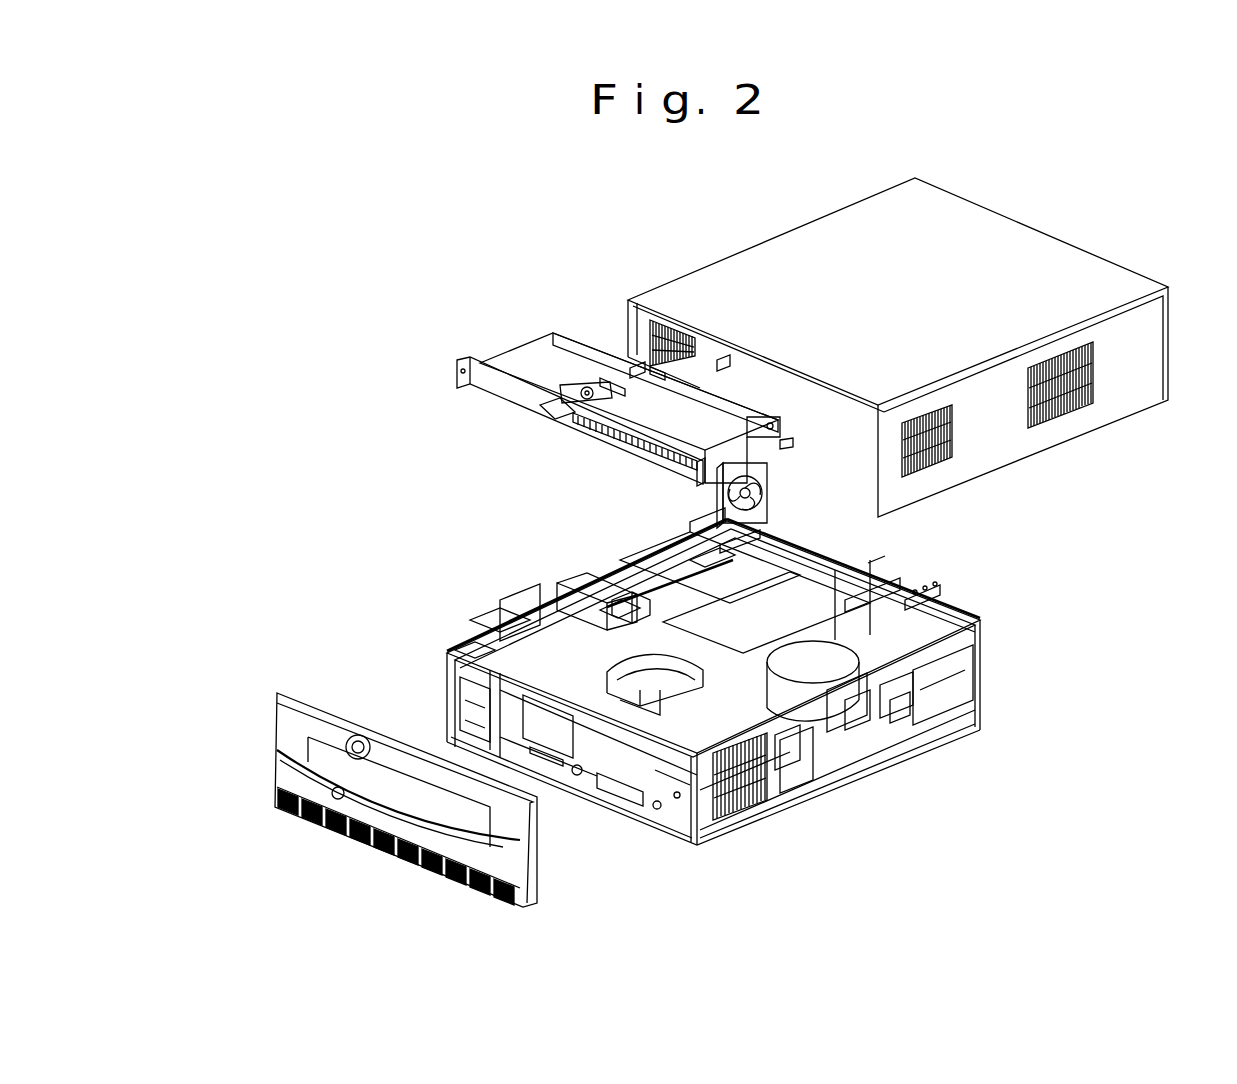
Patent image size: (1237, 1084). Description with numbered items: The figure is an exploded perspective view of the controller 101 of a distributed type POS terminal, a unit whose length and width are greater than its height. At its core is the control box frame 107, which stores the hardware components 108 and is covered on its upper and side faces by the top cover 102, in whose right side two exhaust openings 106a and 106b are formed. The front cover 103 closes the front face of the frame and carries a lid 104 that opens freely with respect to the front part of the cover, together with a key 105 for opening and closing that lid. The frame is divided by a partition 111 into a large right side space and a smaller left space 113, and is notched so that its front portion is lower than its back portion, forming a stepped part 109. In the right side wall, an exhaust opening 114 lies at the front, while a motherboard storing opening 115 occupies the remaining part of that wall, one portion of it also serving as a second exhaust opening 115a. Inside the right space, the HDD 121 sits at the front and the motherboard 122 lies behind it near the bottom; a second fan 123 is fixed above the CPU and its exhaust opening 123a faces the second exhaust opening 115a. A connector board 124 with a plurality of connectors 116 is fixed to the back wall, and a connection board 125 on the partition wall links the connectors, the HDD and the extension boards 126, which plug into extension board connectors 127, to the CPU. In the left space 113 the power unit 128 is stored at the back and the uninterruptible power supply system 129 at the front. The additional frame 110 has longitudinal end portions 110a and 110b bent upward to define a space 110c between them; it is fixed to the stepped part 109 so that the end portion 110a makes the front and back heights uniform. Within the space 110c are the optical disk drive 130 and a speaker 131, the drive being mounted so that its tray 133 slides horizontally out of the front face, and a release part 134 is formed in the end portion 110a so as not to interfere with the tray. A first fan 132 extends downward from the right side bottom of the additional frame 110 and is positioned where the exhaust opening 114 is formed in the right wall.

The controller 101 is at (1070, 837).
The top cover 102 is at (898, 335).
The front cover 103 is at (361, 759).
The lid 104 is at (283, 777).
The key 105 is at (357, 735).
The exhaust opening 106a is at (952, 437).
The exhaust opening 106b is at (1090, 390).
The control box frame 107 is at (967, 618).
The hardware components 108 is at (603, 540).
The stepped part 109 is at (512, 648).
The additional frame 110 is at (598, 369).
The end portion 110a is at (475, 382).
The end portion 110b is at (563, 330).
The space 110c is at (540, 358).
The partition 111 is at (650, 633).
The left space 113 is at (512, 645).
The exhaust opening 114 is at (760, 800).
The motherboard storing opening 115 is at (973, 693).
The second exhaust opening 115a is at (910, 688).
The connectors 116 is at (913, 605).
The HDD 121 is at (680, 727).
The motherboard 122 is at (767, 767).
The second fan 123 is at (813, 667).
The exhaust opening 123a is at (885, 705).
The connector board 124 is at (860, 643).
The connection board 125 is at (618, 547).
The extension boards 126 is at (833, 627).
The extension board connectors 127 is at (770, 525).
The power unit 128 is at (683, 573).
The uninterruptible power supply system 129 is at (490, 657).
The optical disk drive 130 is at (707, 410).
The speaker 131 is at (553, 407).
The first fan 132 is at (768, 480).
The tray 133 is at (580, 427).
The release part 134 is at (683, 477).